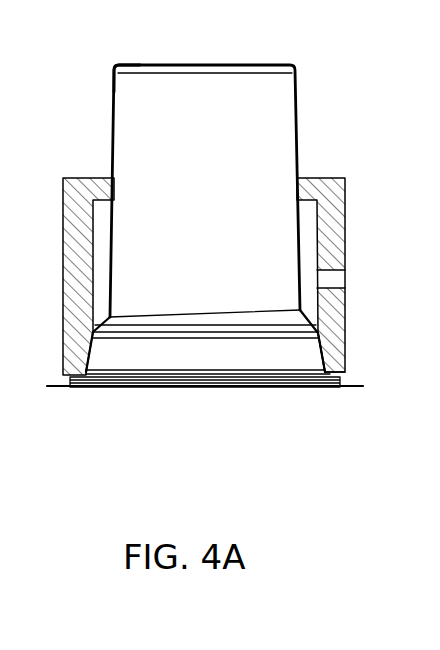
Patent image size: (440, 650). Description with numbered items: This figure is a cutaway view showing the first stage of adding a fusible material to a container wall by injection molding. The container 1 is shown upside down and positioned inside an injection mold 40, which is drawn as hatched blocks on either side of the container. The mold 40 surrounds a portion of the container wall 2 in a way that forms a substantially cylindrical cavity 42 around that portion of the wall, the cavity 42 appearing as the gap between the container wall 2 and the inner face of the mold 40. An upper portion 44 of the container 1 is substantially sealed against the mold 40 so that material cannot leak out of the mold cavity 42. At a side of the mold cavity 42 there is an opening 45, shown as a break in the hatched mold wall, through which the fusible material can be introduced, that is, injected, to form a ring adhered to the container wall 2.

The container 1 is at (265, 140).
The container wall 2 is at (113, 92).
The injection mold 40 is at (336, 214).
The mold cavity 42 is at (104, 247).
The upper portion of the container 44 is at (343, 344).
The opening 45 is at (341, 283).